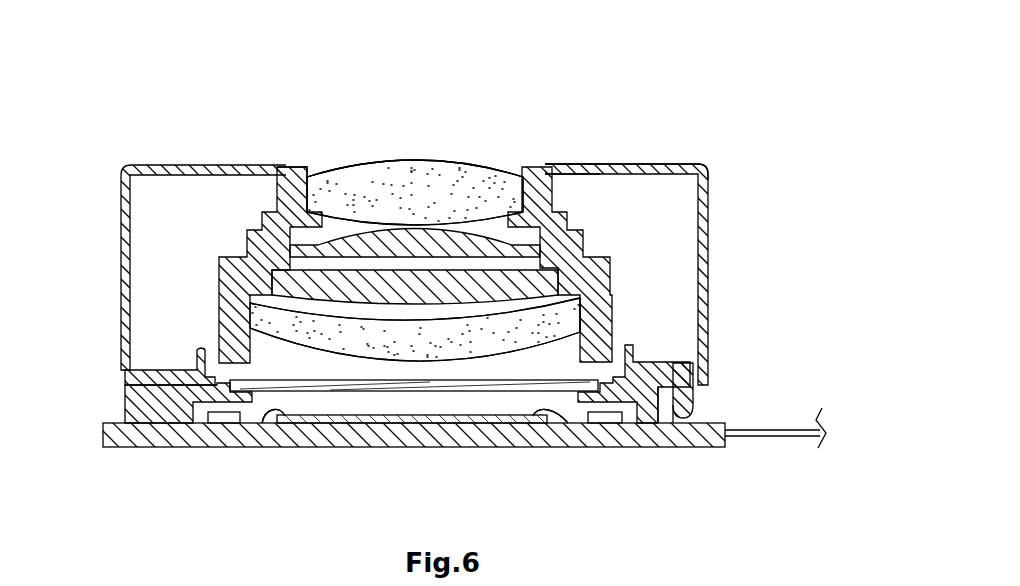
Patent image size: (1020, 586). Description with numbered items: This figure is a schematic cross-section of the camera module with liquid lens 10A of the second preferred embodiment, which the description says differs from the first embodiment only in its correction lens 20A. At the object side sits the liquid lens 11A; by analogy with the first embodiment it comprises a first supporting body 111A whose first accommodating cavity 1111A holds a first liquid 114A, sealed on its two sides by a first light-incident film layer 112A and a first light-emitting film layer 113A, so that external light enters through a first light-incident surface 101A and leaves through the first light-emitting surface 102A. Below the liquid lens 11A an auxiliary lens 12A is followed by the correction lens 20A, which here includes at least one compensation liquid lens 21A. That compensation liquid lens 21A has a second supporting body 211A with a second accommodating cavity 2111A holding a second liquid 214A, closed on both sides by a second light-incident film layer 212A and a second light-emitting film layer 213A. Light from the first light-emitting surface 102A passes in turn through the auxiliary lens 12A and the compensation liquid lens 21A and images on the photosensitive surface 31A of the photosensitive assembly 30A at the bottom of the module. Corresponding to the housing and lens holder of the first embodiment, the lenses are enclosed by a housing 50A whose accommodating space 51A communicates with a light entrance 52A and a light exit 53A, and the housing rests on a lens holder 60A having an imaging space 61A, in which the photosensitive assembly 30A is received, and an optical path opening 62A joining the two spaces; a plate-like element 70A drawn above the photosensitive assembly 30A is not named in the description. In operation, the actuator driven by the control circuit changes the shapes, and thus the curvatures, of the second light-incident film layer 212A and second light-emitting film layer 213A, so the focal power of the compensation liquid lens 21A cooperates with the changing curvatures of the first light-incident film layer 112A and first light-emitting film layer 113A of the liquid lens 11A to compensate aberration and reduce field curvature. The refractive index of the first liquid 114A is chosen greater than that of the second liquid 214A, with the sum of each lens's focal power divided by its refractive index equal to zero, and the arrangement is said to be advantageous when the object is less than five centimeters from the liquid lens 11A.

The lens module 10A is at (466, 119).
The liquid lens 11A is at (677, 88).
The top wall of cover 111A is at (552, 173).
The inner edge of cover opening 1111A is at (508, 193).
The first light-incident film layer 112A is at (473, 175).
The first light-emitting film layer 113A is at (432, 225).
The first liquid 114A is at (347, 168).
The first lens optical surface 101A is at (370, 166).
The first light-emitting surface 102A is at (298, 168).
The first lens 52A is at (385, 167).
The housing 50A is at (128, 212).
The lens barrel 51A is at (299, 293).
The support plate 53A is at (125, 371).
The holder 60A is at (152, 400).
The filter 70A is at (333, 393).
The adhesive 61A is at (365, 406).
The gap 62A is at (388, 398).
The photosensitive surface 31A is at (500, 424).
The photosensitive assembly 30A is at (537, 434).
The auxiliary lens 12A is at (497, 250).
The correction lens 20A is at (510, 300).
The second light-incident film layer 212A is at (550, 297).
The second accommodating cavity 2111A is at (578, 309).
The second supporting body 211A is at (455, 340).
The compensation liquid lens 21A is at (537, 325).
The second light-emitting film layer 213A is at (440, 349).
The second liquid 214A is at (795, 316).